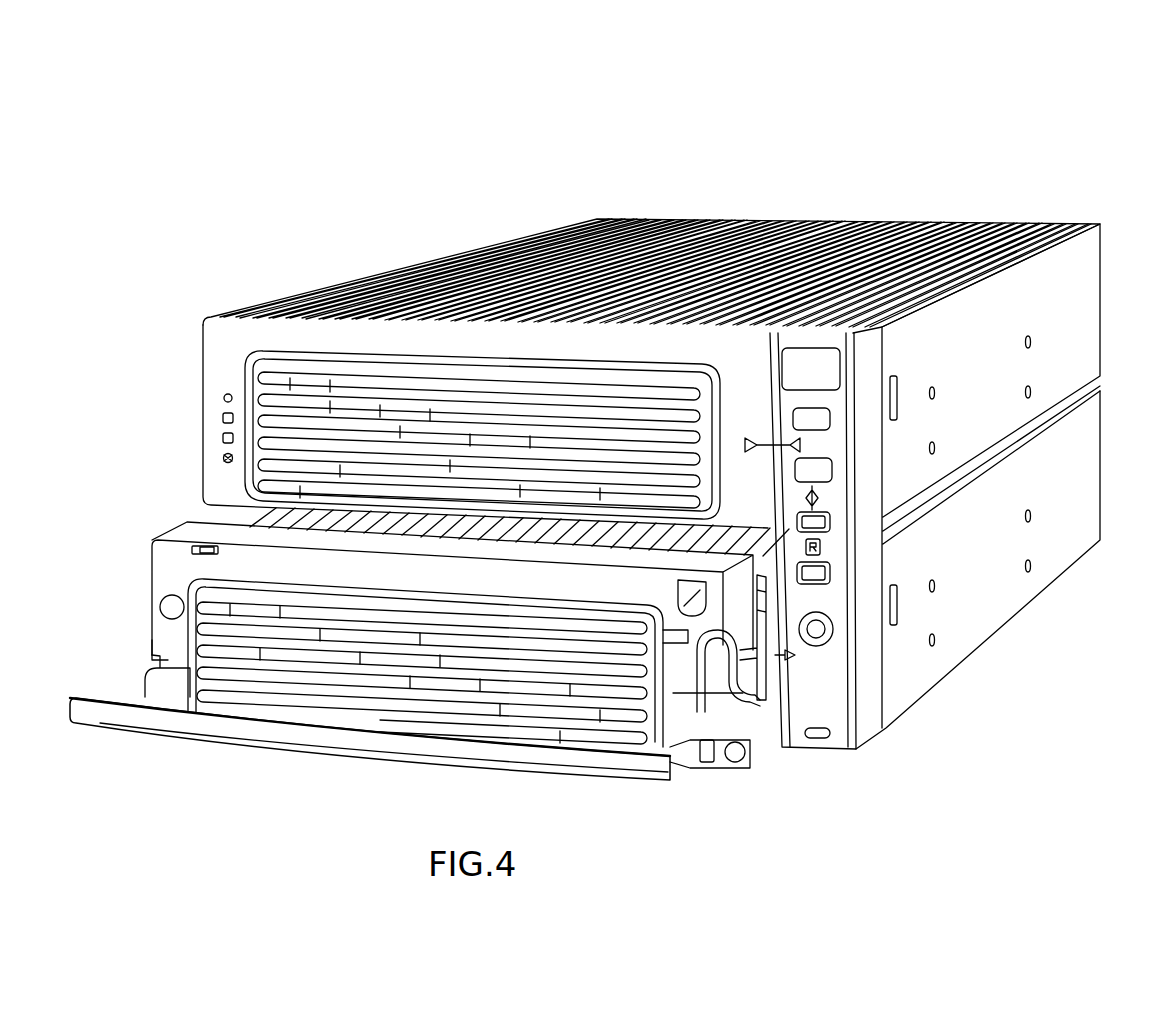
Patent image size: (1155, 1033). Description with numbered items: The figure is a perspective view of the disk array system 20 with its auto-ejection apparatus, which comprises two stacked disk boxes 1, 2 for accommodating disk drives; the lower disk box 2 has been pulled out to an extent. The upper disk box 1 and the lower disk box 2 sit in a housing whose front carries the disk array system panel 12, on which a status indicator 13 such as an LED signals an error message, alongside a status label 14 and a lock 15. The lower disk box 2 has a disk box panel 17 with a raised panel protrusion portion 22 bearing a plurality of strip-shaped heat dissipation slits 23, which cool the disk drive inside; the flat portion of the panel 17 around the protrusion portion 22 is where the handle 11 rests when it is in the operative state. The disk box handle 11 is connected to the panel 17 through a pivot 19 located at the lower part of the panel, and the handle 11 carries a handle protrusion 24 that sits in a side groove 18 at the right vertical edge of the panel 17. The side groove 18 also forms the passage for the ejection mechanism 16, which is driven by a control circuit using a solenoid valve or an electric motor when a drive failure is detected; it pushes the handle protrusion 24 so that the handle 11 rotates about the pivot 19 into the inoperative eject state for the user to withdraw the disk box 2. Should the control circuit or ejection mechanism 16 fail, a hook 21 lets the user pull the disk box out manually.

The disk array system 20 is at (845, 188).
The disk box 1 is at (1098, 302).
The disk box 2 is at (1098, 430).
The disk box handle 11 is at (104, 724).
The disk array system panel 12 is at (836, 347).
The status indicator 13 is at (831, 413).
The status label 14 is at (822, 544).
The lock 15 is at (820, 647).
The ejection mechanism 16 is at (776, 613).
The disk box panel 17 is at (170, 563).
The side groove 18 is at (657, 752).
The pivot 19 is at (730, 760).
The hook 21 is at (698, 393).
The panel protrusion portion 22 is at (254, 592).
The heat dissipation slit 23 is at (162, 650).
The handle protrusion 24 is at (708, 763).